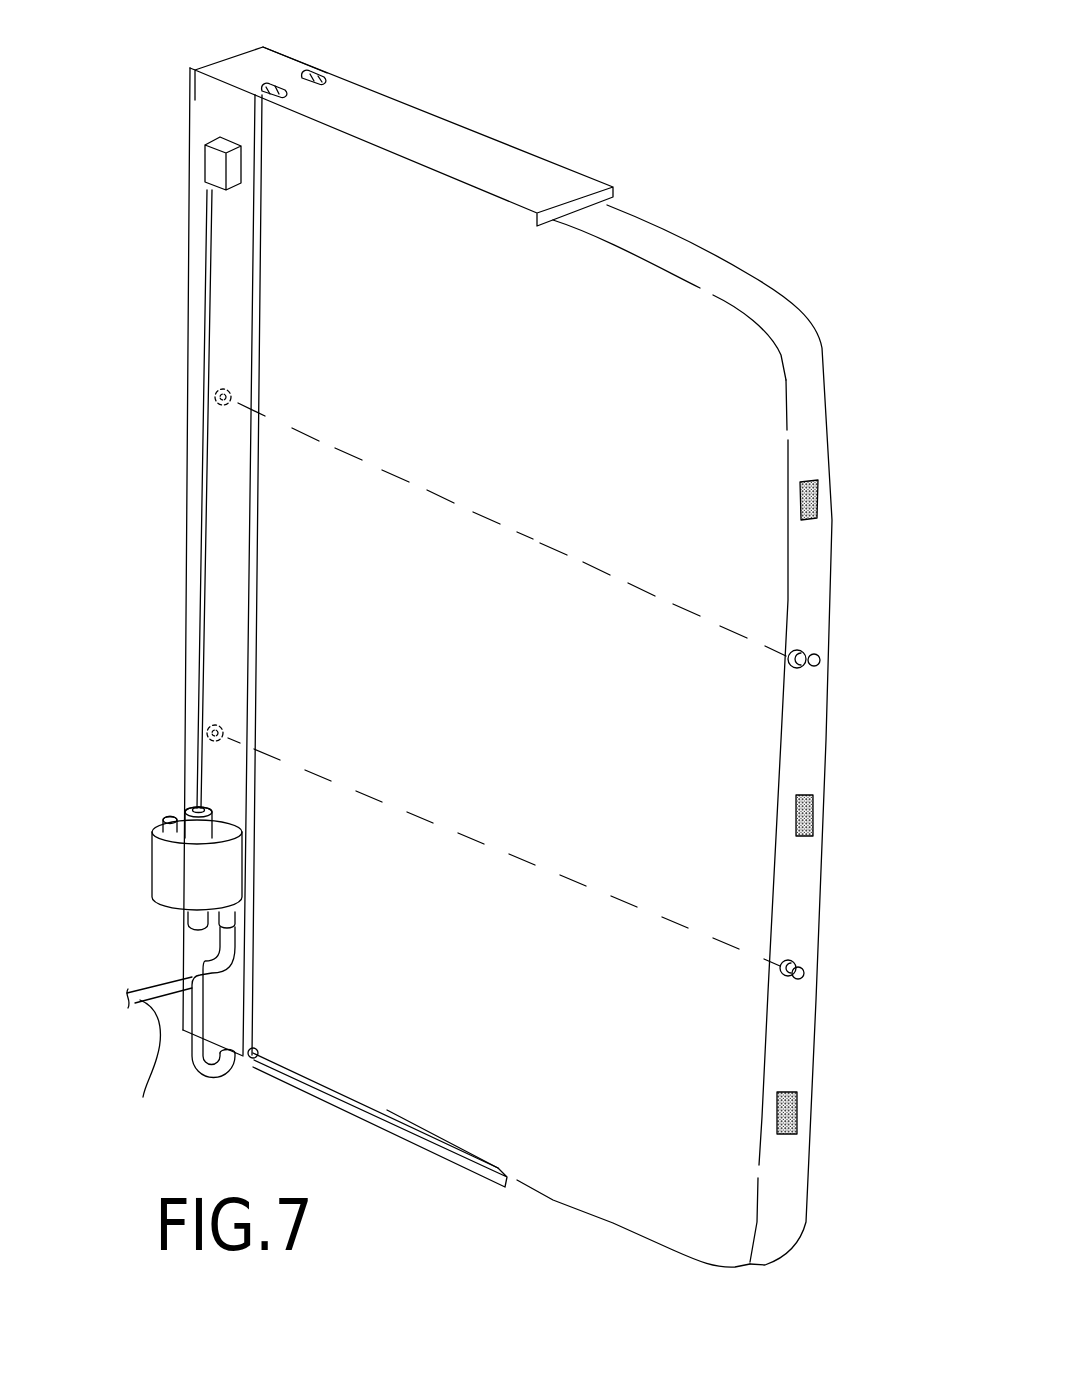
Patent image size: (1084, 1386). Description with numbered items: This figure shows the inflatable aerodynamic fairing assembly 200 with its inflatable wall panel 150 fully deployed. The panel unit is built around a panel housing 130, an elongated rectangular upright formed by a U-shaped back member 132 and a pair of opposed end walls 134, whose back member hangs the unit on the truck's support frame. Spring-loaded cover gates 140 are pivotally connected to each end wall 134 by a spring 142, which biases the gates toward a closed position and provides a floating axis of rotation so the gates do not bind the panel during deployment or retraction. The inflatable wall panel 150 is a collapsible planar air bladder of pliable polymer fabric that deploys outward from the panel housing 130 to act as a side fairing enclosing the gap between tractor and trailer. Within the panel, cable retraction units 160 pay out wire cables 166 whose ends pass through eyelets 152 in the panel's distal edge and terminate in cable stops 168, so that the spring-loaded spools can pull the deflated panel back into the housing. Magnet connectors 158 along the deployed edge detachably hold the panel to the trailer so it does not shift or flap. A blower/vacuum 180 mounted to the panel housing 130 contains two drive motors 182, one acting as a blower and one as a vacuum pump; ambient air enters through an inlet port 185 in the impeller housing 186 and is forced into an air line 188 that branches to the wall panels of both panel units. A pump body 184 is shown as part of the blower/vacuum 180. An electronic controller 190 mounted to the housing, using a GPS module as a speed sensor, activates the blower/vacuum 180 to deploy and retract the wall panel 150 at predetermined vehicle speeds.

The panel housing 130 is at (191, 263).
The back member 132 is at (207, 106).
The end wall 134 is at (265, 66).
The cover gate 140 is at (490, 166).
The spring 142 is at (330, 72).
The inflatable wall panel 150 is at (760, 299).
The eyelet 152 is at (790, 650).
The magnet connector 158 is at (810, 498).
The cable retraction unit 160 is at (232, 390).
The wire cable 166 is at (523, 531).
The cable stop 168 is at (814, 668).
The blower/vacuum 180 is at (177, 865).
The drive motor 182 is at (192, 808).
The pump 184 is at (217, 870).
The inlet port 185 is at (165, 818).
The impeller housing 186 is at (233, 950).
The air line 188 is at (143, 1092).
The electronic controller 190 is at (206, 164).
The bed system 200 is at (723, 122).